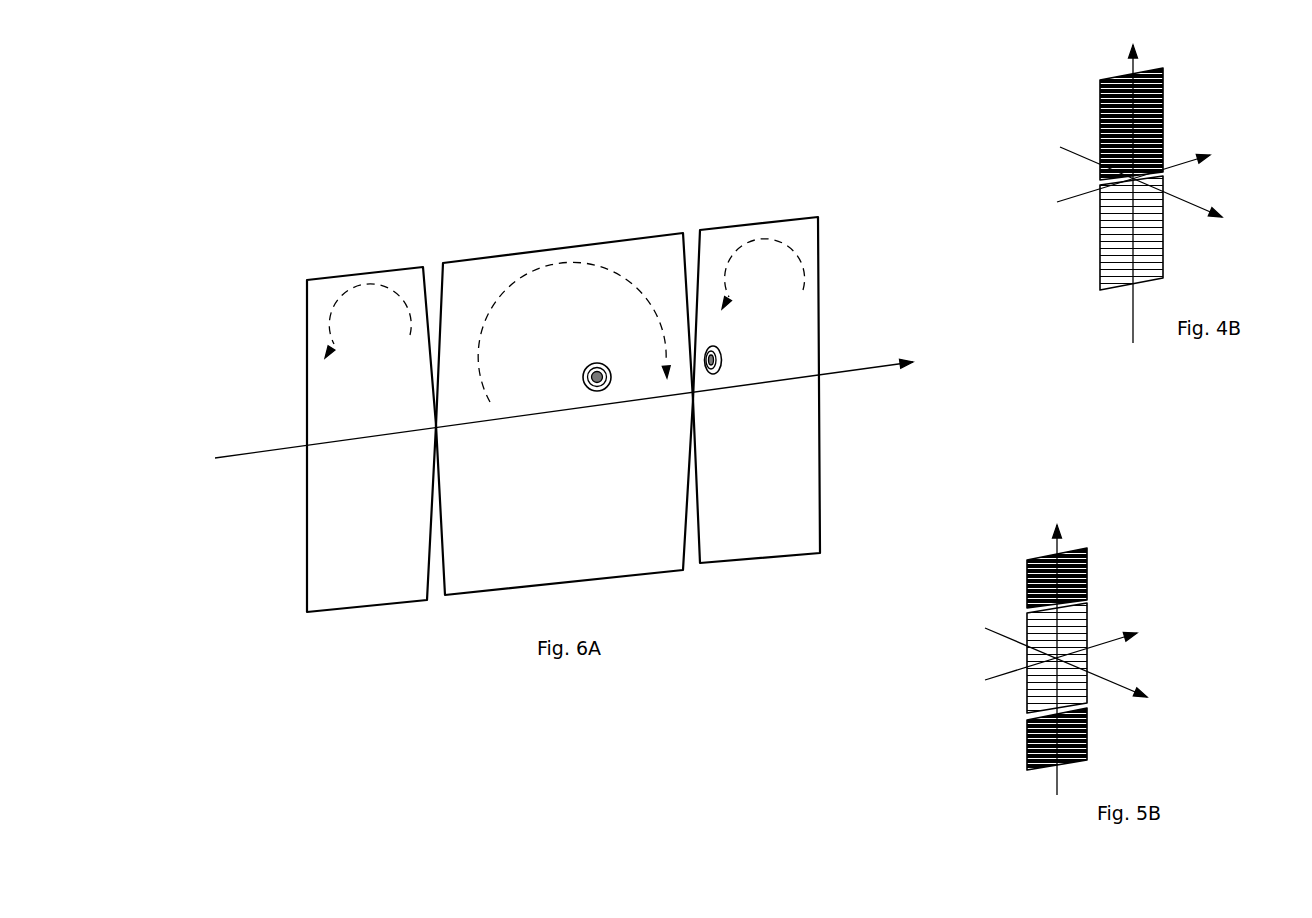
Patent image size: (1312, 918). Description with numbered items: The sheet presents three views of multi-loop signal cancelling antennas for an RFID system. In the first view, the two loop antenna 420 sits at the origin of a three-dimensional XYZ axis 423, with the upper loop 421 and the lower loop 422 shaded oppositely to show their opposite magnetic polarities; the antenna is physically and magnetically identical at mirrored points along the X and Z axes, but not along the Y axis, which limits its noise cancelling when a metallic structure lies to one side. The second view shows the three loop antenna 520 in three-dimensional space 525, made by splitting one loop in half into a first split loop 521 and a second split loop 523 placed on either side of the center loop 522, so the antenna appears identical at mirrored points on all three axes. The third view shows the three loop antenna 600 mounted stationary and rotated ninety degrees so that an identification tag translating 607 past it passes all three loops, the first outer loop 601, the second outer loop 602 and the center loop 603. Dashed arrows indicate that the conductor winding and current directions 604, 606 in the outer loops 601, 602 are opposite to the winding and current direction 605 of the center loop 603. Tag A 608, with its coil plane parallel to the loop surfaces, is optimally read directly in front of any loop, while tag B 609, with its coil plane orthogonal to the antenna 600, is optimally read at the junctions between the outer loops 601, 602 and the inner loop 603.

In FIG. 6A, the three loop signal cancelling antenna 600 is at (352, 233).
In FIG. 6A, the first outer loop 601 is at (295, 305).
In FIG. 6A, the second outer loop 602 is at (835, 228).
In FIG. 6A, the center loop 603 is at (597, 232).
In FIG. 6A, the conductor winding direction and current direction of first outer loop 604 is at (350, 320).
In FIG. 6A, the conductor winding direction and current direction of center loop 605 is at (602, 280).
In FIG. 6A, the conductor winding direction and current direction of second outer loop 606 is at (750, 268).
In FIG. 6A, the tag translation direction 607 is at (840, 380).
In FIG. 6A, the tag A 608 is at (570, 380).
In FIG. 6A, the tag B 609 is at (733, 363).
In FIG. 4B, the two loop antenna 420 is at (1093, 82).
In FIG. 4B, the upper loop 421 is at (1093, 98).
In FIG. 4B, the lower loop 422 is at (1097, 255).
In FIG. 4B, the 3-dimensional XYZ axis 423 is at (1197, 180).
In FIG. 5B, the three loop antenna 520 is at (1120, 600).
In FIG. 5B, the first split loop 521 is at (1027, 556).
In FIG. 5B, the center loop 522 is at (1020, 651).
In FIG. 5B, the second split loop 523 is at (1042, 777).
In FIG. 5B, the 3-dimensional space axes 525 is at (1123, 650).